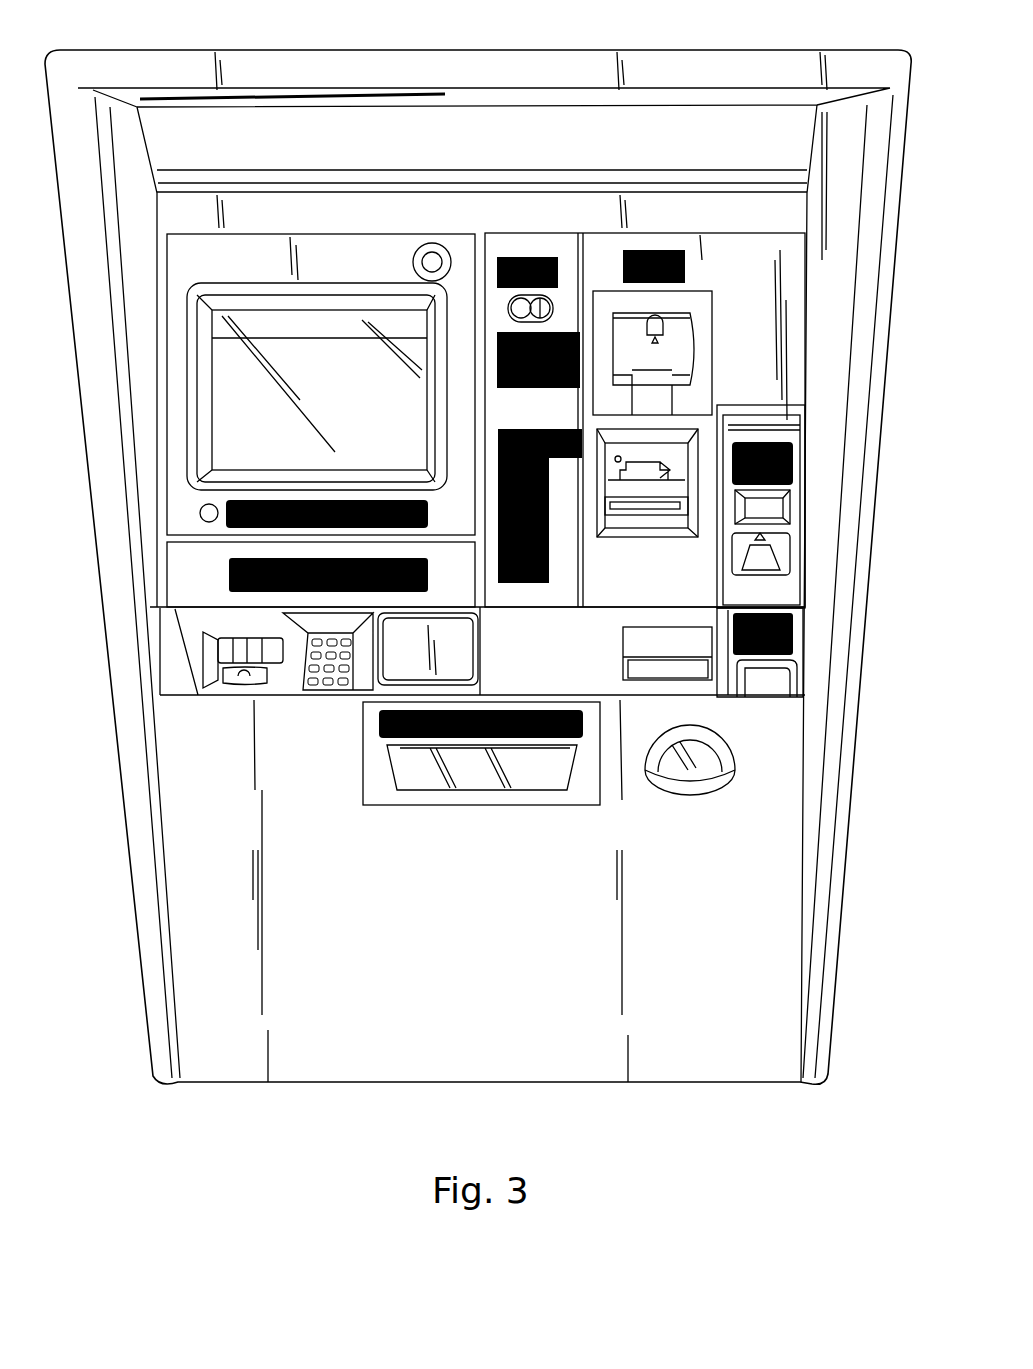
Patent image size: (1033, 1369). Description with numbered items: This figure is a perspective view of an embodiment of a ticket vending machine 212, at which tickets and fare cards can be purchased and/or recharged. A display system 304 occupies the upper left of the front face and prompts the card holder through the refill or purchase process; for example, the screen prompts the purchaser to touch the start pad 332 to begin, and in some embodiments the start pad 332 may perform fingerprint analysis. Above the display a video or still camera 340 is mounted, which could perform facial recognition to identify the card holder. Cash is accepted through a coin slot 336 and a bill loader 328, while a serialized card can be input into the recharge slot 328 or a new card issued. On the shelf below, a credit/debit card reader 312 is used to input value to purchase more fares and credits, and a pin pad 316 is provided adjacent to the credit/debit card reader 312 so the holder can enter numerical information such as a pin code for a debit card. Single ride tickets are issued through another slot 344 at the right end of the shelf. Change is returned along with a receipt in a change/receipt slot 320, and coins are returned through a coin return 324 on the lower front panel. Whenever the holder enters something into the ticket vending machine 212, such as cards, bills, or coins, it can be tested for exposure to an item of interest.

The ticket vending machine 212 is at (630, 23).
The display system 304 is at (317, 386).
The credit/debit card reader 312 is at (243, 689).
The pin pad 316 is at (338, 684).
The change/receipt slot 320 is at (472, 776).
The coin return 324 is at (690, 797).
The bill loader / recharge slot 328 is at (678, 448).
The start pad 332 is at (670, 318).
The coin slot 336 is at (556, 304).
The video or still camera 340 is at (416, 252).
The single ride ticket slot 344 is at (757, 662).